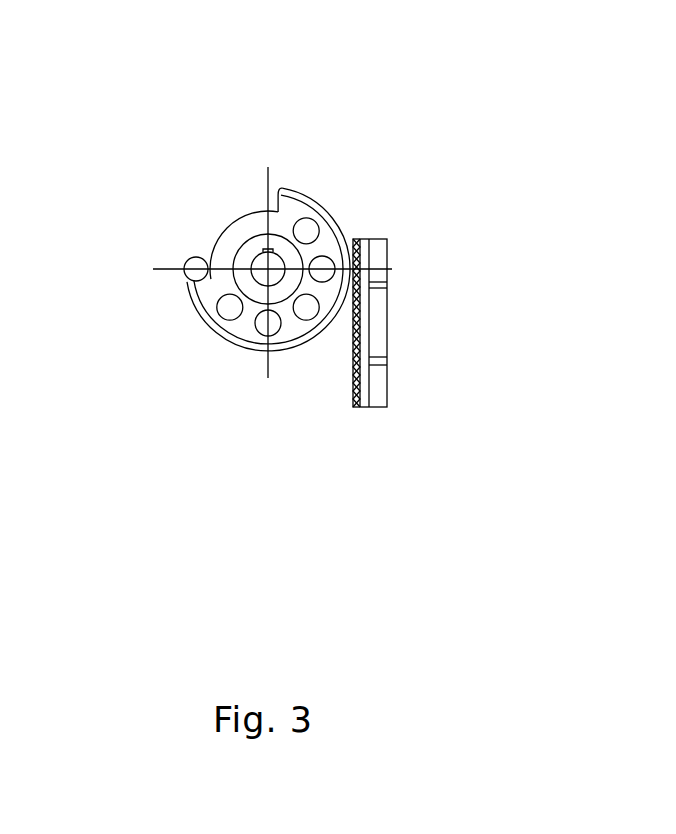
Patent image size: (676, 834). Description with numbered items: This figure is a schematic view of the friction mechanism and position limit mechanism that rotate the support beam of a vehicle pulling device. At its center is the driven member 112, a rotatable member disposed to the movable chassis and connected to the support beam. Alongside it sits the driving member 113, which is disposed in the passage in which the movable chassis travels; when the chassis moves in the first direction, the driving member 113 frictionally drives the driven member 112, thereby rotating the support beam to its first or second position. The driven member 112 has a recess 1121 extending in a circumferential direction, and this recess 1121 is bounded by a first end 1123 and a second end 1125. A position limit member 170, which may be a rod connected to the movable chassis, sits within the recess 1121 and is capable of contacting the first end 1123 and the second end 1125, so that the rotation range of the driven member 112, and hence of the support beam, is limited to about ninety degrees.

The driven member 112 is at (292, 225).
The recess 1121 is at (232, 217).
The first end 1123 is at (201, 283).
The second end 1125 is at (277, 200).
The position limit member 170 is at (195, 267).
The driving member 113 is at (362, 407).